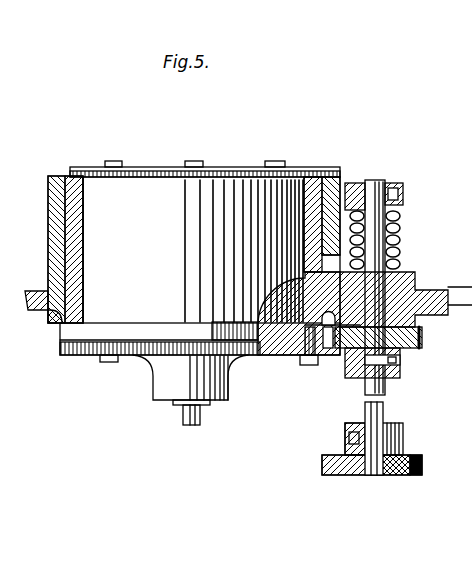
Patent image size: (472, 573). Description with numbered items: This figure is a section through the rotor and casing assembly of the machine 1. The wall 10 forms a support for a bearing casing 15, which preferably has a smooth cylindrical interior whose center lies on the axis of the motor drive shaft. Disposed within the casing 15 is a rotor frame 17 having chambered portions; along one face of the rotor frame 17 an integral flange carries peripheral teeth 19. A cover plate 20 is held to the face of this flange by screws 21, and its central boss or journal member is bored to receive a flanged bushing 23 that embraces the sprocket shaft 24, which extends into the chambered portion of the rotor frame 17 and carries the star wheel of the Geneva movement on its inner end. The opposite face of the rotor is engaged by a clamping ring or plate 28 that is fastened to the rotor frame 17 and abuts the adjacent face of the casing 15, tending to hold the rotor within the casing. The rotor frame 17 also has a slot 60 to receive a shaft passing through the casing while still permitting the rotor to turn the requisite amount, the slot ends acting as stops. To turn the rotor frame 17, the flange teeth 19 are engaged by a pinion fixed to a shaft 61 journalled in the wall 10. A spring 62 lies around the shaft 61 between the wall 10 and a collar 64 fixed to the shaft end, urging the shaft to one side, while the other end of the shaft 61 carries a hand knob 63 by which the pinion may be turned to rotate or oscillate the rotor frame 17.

The bearing casing 15 is at (66, 229).
The rotor frame 17 is at (193, 258).
The clamping ring or plate 28 is at (165, 154).
The wall 10 is at (80, 302).
The peripheral teeth 19 is at (76, 332).
The screws 21 is at (108, 363).
The cover plate 20 is at (155, 388).
The flanged bushing 23 is at (208, 405).
The sprocket shaft 24 is at (200, 425).
The shaft 61 is at (405, 288).
The spring 62 is at (400, 233).
The collar 64 is at (403, 196).
The slot 60 is at (422, 338).
The hand knob 63 is at (385, 437).
The body 1 is at (448, 300).